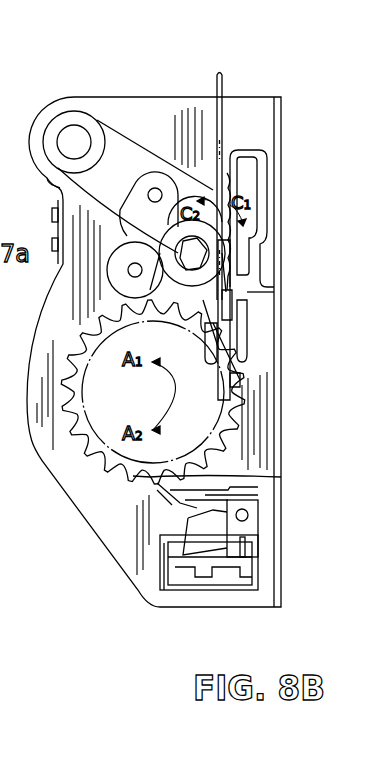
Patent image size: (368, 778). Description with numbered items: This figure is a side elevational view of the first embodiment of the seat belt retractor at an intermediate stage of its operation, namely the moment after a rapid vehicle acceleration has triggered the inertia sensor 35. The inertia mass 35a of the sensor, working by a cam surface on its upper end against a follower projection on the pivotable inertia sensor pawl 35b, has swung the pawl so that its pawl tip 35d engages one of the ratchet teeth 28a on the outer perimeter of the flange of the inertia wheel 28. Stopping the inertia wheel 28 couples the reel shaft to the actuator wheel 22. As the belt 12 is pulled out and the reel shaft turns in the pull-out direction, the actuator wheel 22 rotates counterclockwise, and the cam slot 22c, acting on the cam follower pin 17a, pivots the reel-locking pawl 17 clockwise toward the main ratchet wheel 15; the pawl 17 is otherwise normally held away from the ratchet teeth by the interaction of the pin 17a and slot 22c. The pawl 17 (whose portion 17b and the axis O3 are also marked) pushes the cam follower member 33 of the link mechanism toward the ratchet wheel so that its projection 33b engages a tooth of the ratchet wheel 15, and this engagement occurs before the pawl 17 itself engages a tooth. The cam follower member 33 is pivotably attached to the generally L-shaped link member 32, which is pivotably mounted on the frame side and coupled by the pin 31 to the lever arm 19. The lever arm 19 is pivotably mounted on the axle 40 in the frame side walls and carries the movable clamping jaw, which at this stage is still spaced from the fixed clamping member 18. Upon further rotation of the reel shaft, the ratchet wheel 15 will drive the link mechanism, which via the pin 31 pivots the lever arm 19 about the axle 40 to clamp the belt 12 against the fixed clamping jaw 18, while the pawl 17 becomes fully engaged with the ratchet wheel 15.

The belt 12 is at (222, 80).
The main ratchet wheel 15 is at (238, 427).
The reel-locking pawl 17 is at (223, 250).
The cam follower pin 17a is at (232, 305).
The pawl lever arm 17b is at (232, 348).
The fixed clamping member 18 is at (246, 259).
The lever arm 19 is at (148, 163).
The actuator wheel 22 is at (247, 340).
The cam slot 22c is at (240, 323).
The inertia wheel 28 is at (130, 480).
The ratchet teeth 28a is at (235, 478).
The pin 31 is at (158, 196).
The link member 32 is at (58, 197).
The cam follower member 33 is at (118, 287).
The projection 33b is at (230, 378).
The inertia sensor 35 is at (266, 558).
The inertia mass 35a is at (202, 535).
The inertia sensor pawl 35b is at (213, 494).
The pawl tip 35d is at (157, 490).
The axle 40 is at (70, 138).
The pivot axis O3 is at (133, 269).